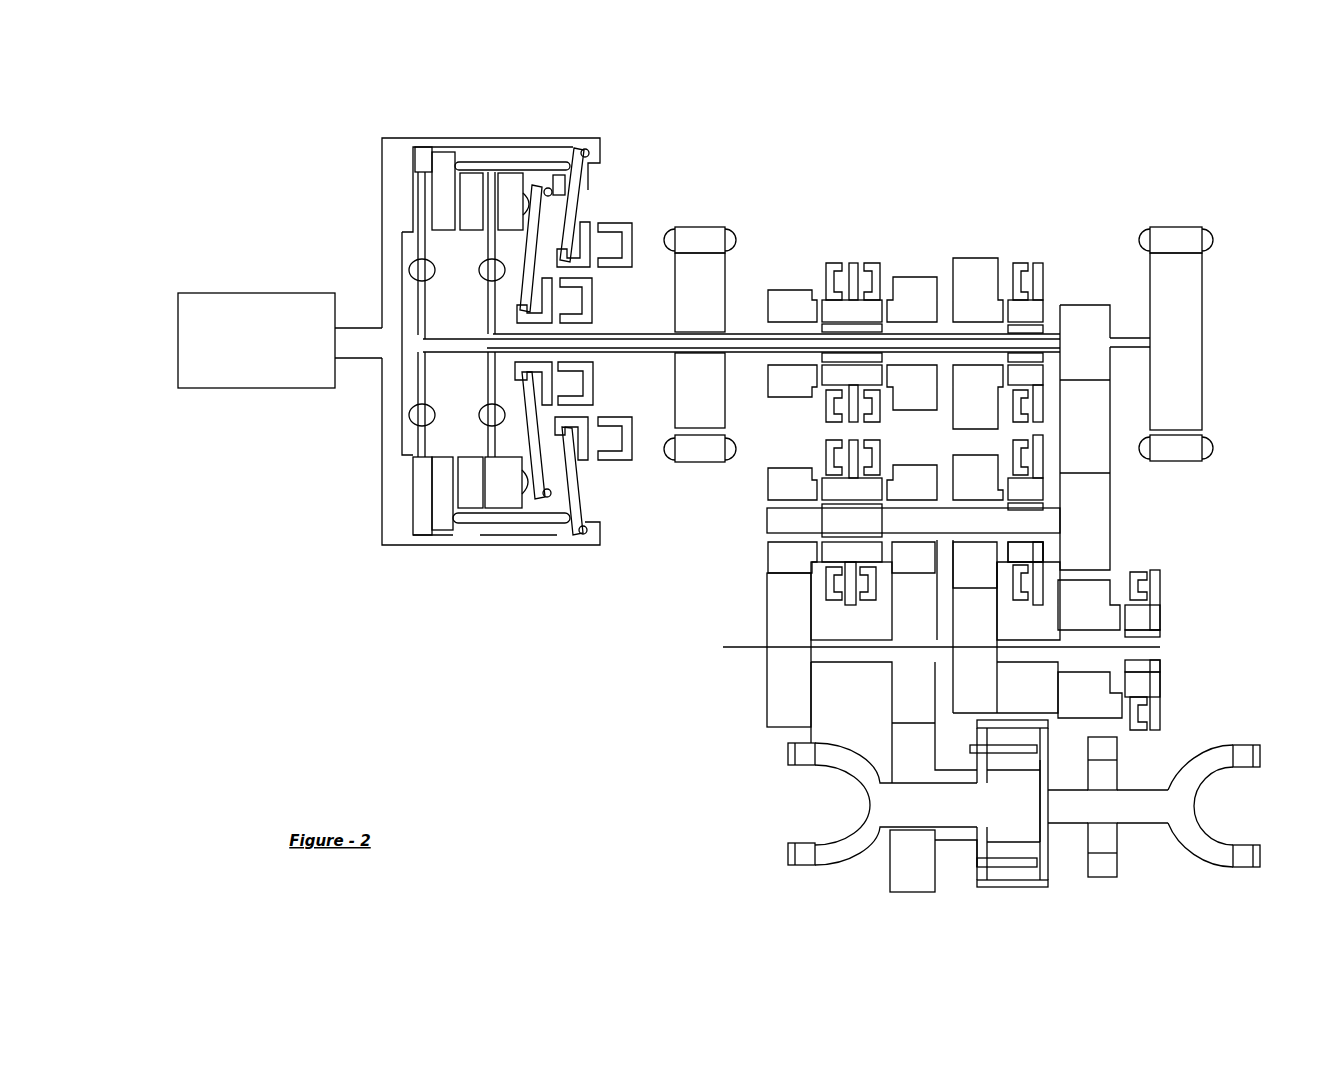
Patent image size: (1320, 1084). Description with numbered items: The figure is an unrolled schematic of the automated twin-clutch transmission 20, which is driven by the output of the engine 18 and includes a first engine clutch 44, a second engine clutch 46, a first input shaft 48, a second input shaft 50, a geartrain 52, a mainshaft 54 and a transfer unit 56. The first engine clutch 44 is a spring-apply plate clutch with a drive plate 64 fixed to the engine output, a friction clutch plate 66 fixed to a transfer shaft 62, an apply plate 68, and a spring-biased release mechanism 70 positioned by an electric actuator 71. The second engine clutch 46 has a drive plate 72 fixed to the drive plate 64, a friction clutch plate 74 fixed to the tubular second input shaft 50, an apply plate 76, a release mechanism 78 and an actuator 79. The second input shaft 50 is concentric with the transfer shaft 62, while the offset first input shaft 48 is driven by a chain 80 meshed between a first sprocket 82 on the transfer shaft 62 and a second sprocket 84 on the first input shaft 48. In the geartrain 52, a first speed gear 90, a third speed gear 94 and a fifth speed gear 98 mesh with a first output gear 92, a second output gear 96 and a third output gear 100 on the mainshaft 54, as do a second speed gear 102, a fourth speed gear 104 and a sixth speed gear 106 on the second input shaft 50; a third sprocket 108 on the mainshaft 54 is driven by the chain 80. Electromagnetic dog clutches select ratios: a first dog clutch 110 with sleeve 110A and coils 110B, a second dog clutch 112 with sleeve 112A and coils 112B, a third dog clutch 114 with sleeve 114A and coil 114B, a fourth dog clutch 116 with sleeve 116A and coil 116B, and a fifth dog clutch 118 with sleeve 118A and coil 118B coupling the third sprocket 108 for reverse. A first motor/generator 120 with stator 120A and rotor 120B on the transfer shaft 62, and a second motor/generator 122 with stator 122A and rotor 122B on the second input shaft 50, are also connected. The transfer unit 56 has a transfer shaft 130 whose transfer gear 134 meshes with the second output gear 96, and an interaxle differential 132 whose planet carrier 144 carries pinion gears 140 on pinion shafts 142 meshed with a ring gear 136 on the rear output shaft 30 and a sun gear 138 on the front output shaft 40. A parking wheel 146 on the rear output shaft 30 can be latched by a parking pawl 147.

The engine 18 is at (216, 305).
The twin-clutch transmission 20 is at (1020, 150).
The rear output shaft 30 is at (1154, 825).
The front output shaft 40 is at (870, 800).
The first engine clutch 44 is at (392, 255).
The second engine clutch 46 is at (478, 436).
The first input shaft 48 is at (772, 518).
The second input shaft 50 is at (737, 330).
The geartrain 52 is at (1075, 260).
The mainshaft 54 is at (1160, 645).
The transfer unit 56 is at (873, 897).
The transfer shaft 62 is at (1135, 345).
The drive plate 64 is at (395, 540).
The friction clutch plate 66 is at (425, 312).
The apply plate 68 is at (445, 555).
The release mechanism 70 is at (590, 510).
The actuator 71 is at (630, 465).
The drive plate 72 is at (470, 200).
The friction clutch plate 74 is at (490, 238).
The apply plate 76 is at (513, 195).
The release mechanism 78 is at (537, 222).
The actuator 79 is at (603, 293).
The chain 80 is at (1100, 460).
The first sprocket 82 is at (1085, 310).
The second sprocket 84 is at (1100, 520).
The first speed gear 90 is at (785, 476).
The first output gear 92 is at (780, 680).
The third speed gear 94 is at (905, 482).
The second output gear 96 is at (905, 675).
The fifth speed gear 98 is at (960, 472).
The third output gear 100 is at (970, 612).
The second speed gear 102 is at (778, 305).
The fourth speed gear 104 is at (910, 290).
The sixth speed gear 106 is at (968, 282).
The third sprocket 108 is at (1120, 575).
The first dog clutch 110 is at (817, 591).
The sliding sleeve 110A is at (850, 603).
The electromagnetic coils 110B is at (823, 585).
The second dog clutch 112 is at (848, 299).
The sliding sleeve 112A is at (852, 272).
The electromagnetic coils 112B is at (832, 405).
The third dog clutch 114 is at (1046, 494).
The sliding sleeve 114A is at (1030, 550).
The electromagnetic coil 114B is at (1013, 570).
The fourth dog clutch 116 is at (1048, 306).
The sliding sleeve 116A is at (1035, 372).
The electromagnetic coil 116B is at (1019, 260).
The fifth dog clutch 118 is at (1190, 650).
The sliding sleeve 118A is at (1150, 703).
The electromagnetic coil 118B is at (1150, 718).
The first motor/generator 120 is at (1218, 300).
The stator 120A is at (1190, 448).
The rotor 120B is at (1165, 356).
The second motor/generator 122 is at (674, 307).
The stator 122A is at (690, 230).
The rotor 122B is at (690, 382).
The transfer shaft 130 is at (950, 842).
The interaxle differential 132 is at (1020, 890).
The transfer gear 134 is at (910, 882).
The ring gear 136 is at (1000, 888).
The sun gear 138 is at (993, 842).
The pinion gears 140 is at (1022, 878).
The pinion shafts 142 is at (985, 868).
The planet carrier 144 is at (975, 748).
The parking wheel 146 is at (1103, 782).
The parking pawl 147 is at (1102, 868).